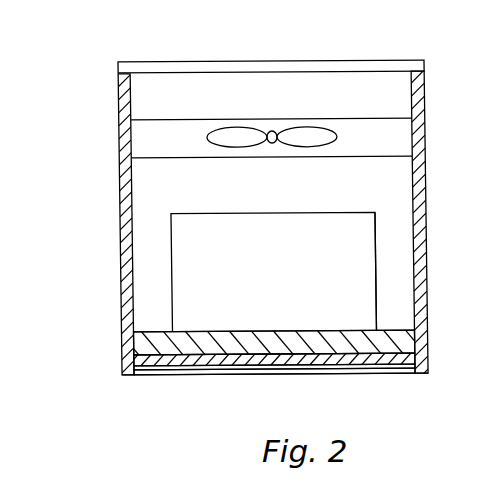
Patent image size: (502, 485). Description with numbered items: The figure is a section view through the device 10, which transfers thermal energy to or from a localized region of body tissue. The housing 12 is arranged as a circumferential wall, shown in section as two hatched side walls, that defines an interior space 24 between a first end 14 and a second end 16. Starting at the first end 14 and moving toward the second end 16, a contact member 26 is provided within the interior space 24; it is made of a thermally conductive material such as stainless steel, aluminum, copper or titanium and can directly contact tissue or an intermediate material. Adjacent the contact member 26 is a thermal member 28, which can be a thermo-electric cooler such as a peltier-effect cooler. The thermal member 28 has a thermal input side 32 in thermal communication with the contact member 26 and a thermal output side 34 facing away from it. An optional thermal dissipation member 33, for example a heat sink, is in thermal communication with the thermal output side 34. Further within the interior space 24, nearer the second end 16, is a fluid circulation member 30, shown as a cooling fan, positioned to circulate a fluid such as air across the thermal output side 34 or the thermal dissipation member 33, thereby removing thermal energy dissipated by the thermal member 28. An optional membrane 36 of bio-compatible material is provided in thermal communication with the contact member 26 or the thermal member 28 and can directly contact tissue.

The device 10 is at (88, 358).
The housing 12 is at (110, 194).
The first end 14 is at (418, 374).
The second end 16 is at (413, 62).
The interior space 24 is at (150, 237).
The contact member 26 is at (228, 360).
The thermal member 28 is at (205, 345).
The fluid circulation member 30 is at (337, 137).
The thermal input side 32 is at (418, 360).
The thermal dissipation member 33 is at (375, 238).
The thermal output side 34 is at (390, 329).
The membrane 36 is at (350, 373).